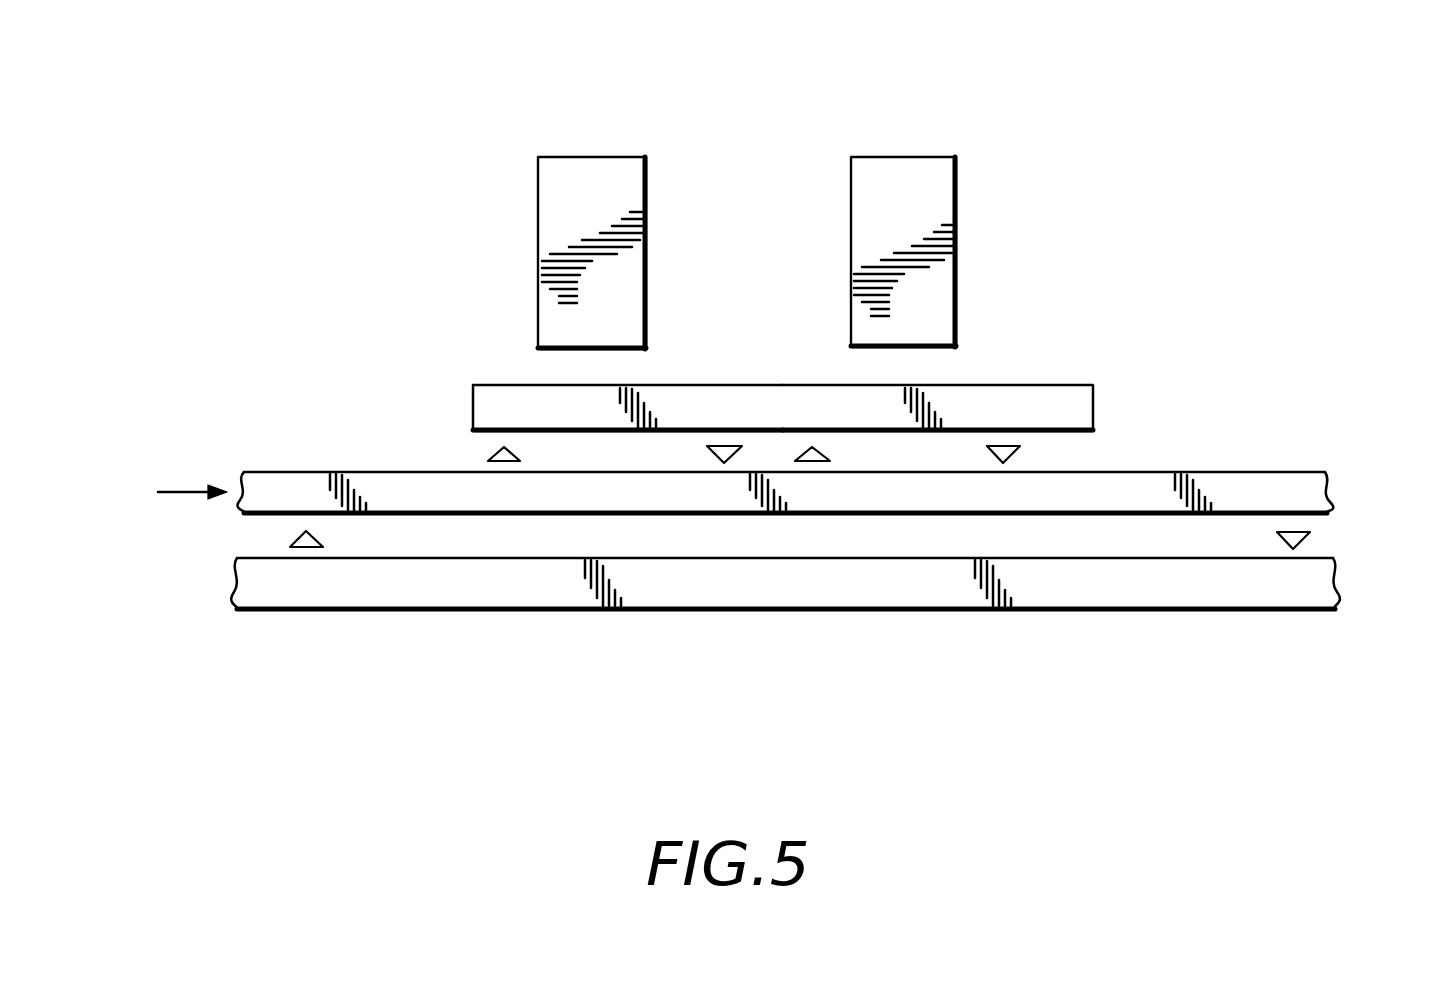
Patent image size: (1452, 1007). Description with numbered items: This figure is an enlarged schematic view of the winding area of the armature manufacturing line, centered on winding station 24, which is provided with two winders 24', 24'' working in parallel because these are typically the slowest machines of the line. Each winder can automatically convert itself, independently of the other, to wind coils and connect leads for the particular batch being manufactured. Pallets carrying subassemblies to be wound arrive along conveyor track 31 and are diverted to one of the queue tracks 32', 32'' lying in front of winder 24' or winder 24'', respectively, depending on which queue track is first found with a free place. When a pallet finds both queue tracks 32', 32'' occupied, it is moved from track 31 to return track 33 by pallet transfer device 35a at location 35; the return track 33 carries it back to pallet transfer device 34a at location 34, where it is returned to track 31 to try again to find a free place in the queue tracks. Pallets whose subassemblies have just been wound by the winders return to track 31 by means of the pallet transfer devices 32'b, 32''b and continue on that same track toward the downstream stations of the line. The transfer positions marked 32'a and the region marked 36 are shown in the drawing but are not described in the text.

The winding station 24 is at (756, 177).
The winder 24' is at (592, 206).
The winder 24'' is at (913, 203).
The conveyor track 31 is at (286, 485).
The queue track 32' is at (606, 360).
The queue track 32'' is at (931, 338).
The first mark 32'a is at (705, 380).
The pallet transfer device 32'b is at (708, 371).
The pallet transfer device 32''b is at (1088, 438).
The return track 33 is at (1225, 597).
The location 34 is at (297, 632).
The pallet transfer device 34a is at (323, 540).
The location 35 is at (1290, 463).
The pallet transfer device 35a is at (1300, 546).
The gap 36 is at (1357, 501).